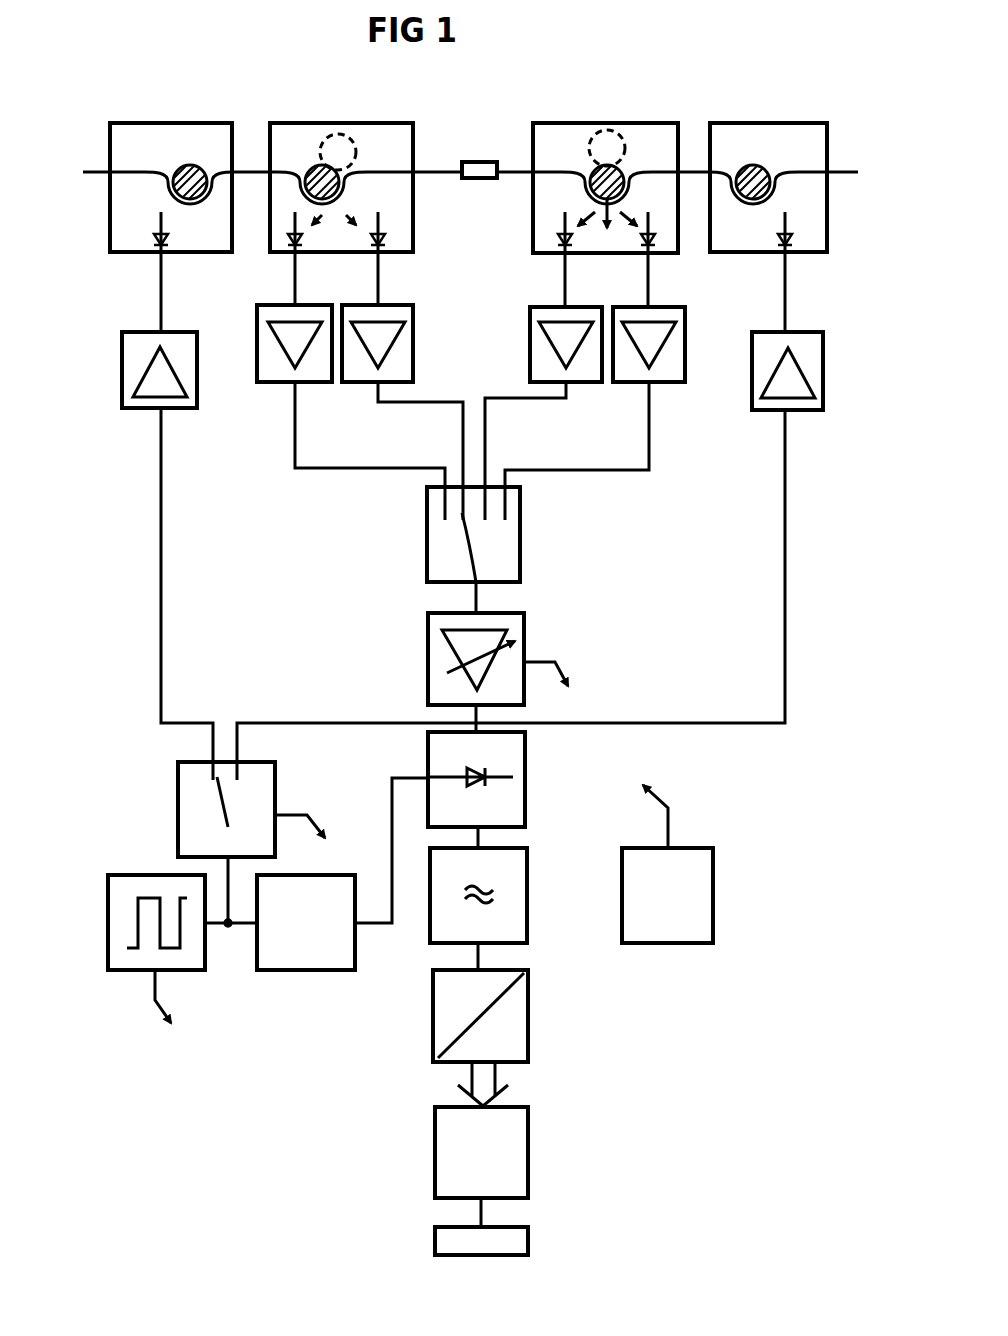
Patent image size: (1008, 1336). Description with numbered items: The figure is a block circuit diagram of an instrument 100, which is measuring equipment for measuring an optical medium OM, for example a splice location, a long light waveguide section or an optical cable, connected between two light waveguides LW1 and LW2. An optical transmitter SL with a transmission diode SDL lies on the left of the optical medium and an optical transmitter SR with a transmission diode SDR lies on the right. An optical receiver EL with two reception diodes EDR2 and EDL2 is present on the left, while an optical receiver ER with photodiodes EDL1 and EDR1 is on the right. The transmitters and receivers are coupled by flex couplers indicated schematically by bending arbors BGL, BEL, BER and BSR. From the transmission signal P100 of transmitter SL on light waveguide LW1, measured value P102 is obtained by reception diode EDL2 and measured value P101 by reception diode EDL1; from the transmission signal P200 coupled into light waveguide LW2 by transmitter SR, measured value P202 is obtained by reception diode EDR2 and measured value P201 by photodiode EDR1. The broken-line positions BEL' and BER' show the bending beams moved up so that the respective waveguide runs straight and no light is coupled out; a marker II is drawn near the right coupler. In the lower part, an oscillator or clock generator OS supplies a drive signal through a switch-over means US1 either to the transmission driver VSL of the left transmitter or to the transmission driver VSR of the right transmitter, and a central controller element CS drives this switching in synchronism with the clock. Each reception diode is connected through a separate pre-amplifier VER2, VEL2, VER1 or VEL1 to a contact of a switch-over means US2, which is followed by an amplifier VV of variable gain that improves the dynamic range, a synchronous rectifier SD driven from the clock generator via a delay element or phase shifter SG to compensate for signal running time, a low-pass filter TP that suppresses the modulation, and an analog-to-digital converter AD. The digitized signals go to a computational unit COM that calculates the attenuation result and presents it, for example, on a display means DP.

The instrument 100 is at (116, 86).
The light waveguide LW1 is at (90, 172).
The light waveguide LW2 is at (845, 172).
The optical transmitter SL is at (142, 138).
The bending arbor BGL is at (193, 165).
The transmission diode SDL is at (157, 227).
The reception diode EDR2 is at (220, 193).
The transmission signal P100 is at (190, 290).
The optical receiver EL is at (388, 135).
The bending arbor BEL is at (308, 141).
The broken-line position of bending beam BEL BEL' is at (344, 119).
The measured value P202 is at (316, 228).
The measured value P102 is at (355, 228).
The reception diode EDL2 is at (382, 230).
The optical medium OM is at (479, 191).
The optical receiver ER is at (658, 135).
The bending arbor BER is at (581, 139).
The bending direction marker II is at (598, 130).
The broken-line position of bending beam BER BER' is at (614, 112).
The reception photodiode EDR1 is at (560, 227).
The measured value P201 is at (586, 222).
The measured value P101 is at (619, 217).
The reception diode EDL1 is at (680, 281).
The optical transmitter SR is at (787, 137).
The bending arbor BSR is at (753, 163).
The transmission signal P200 is at (757, 213).
The transmission diode SDR is at (790, 237).
The transmission diode driver VSL is at (124, 402).
The pre-amplifier VER2 is at (272, 383).
The pre-amplifier VEL2 is at (358, 383).
The pre-amplifier VER1 is at (587, 383).
The pre-amplifier VEL1 is at (670, 383).
The transmission diode driver VSR is at (816, 382).
The switch-over means US2 is at (520, 542).
The variable gain amplifier VV is at (518, 632).
The synchronous rectifier SD is at (515, 758).
The low-pass filter TP is at (518, 908).
The analog-to-digital converter AD is at (523, 1022).
The computational unit COM is at (523, 1150).
The display means DP is at (525, 1240).
The central controller element CS is at (697, 867).
The switch-over means US1 is at (178, 817).
The oscillator or clock generator OS is at (138, 970).
The delay element or phase shifter SG is at (335, 962).